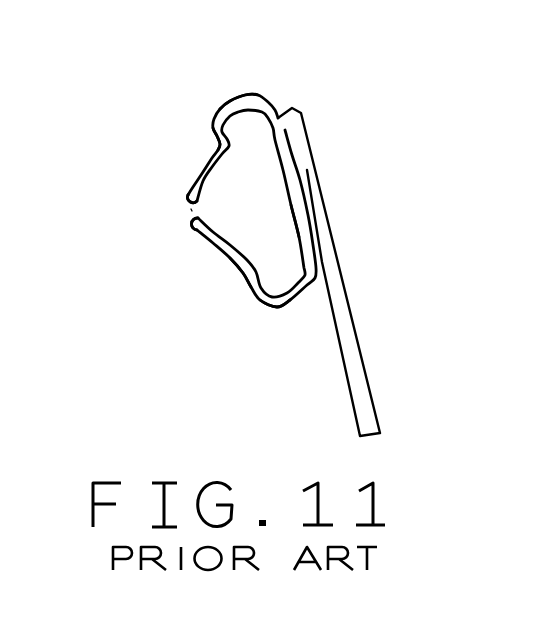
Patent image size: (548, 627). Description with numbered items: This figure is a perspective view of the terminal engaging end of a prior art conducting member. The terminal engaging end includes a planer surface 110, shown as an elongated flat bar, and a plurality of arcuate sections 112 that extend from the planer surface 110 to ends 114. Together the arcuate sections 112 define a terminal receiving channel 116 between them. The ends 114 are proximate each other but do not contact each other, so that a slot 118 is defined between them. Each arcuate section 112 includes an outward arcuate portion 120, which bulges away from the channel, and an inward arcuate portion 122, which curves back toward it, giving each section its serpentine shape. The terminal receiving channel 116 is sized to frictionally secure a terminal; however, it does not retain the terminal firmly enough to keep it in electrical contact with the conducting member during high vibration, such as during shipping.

The planer surface 110 is at (300, 113).
The arcuate section 112 is at (204, 102).
The end 114 is at (187, 196).
The terminal receiving channel 116 is at (286, 218).
The slot 118 is at (189, 214).
The outward arcuate portion 120 is at (232, 96).
The inward arcuate portion 122 is at (210, 145).